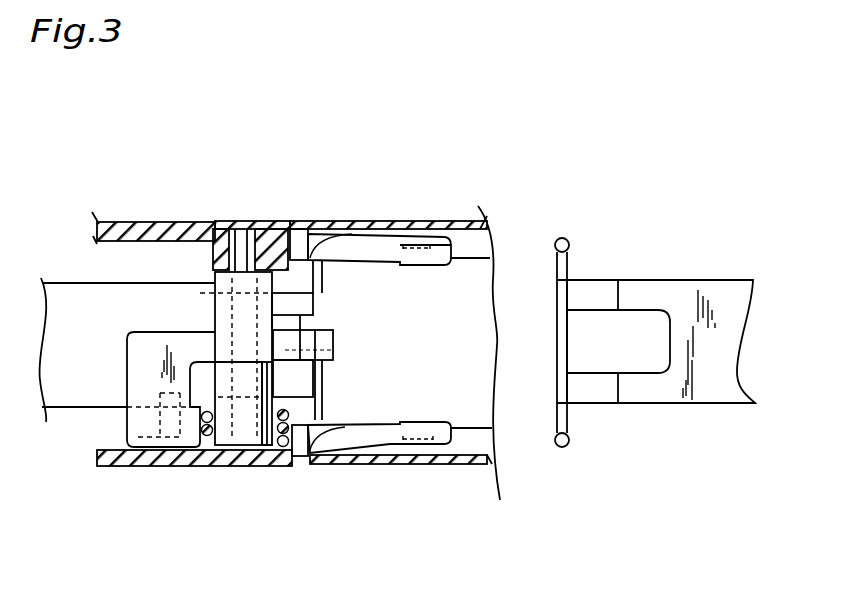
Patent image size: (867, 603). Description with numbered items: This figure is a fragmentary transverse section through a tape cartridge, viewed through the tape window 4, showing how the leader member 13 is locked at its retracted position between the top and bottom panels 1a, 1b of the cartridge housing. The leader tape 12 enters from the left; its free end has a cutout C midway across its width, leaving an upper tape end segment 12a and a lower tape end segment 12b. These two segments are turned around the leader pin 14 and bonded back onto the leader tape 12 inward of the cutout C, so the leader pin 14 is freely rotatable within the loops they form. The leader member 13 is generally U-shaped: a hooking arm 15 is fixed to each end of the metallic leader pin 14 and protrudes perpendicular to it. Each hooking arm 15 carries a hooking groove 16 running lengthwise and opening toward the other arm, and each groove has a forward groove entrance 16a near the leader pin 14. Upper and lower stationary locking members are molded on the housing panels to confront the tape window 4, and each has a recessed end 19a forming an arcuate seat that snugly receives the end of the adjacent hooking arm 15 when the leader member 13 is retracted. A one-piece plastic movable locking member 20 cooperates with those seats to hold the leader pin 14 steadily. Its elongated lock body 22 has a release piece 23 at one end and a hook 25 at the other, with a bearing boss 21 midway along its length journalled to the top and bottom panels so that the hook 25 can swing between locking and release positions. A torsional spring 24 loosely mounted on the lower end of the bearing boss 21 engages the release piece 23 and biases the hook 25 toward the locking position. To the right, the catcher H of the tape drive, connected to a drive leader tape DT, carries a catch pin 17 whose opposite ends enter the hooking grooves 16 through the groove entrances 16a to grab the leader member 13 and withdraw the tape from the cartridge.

The upper wall of housing 1a is at (117, 222).
The lower wall of housing 1b is at (128, 467).
The tape window 4 is at (472, 432).
The leader tape 12 is at (64, 283).
The upper tape end segment 12a is at (290, 300).
The lower tape end segment 12b is at (307, 383).
The leader member 13 is at (445, 274).
The leader pin 14 is at (323, 408).
The hooking arm 15 is at (437, 222).
The hooking groove 16 is at (408, 237).
The groove entrance 16a is at (388, 254).
The catch pin 17 is at (557, 351).
The end of stationary locking member 19a is at (334, 223).
The movable locking member 20 is at (205, 313).
The bearing boss 21 is at (246, 437).
The lock body 22 is at (297, 450).
The release piece 23 is at (130, 371).
The torsional spring 24 is at (200, 448).
The hook 25 is at (337, 343).
The cutout C is at (237, 222).
The catcher H is at (634, 271).
The drive leader tape DT is at (674, 395).